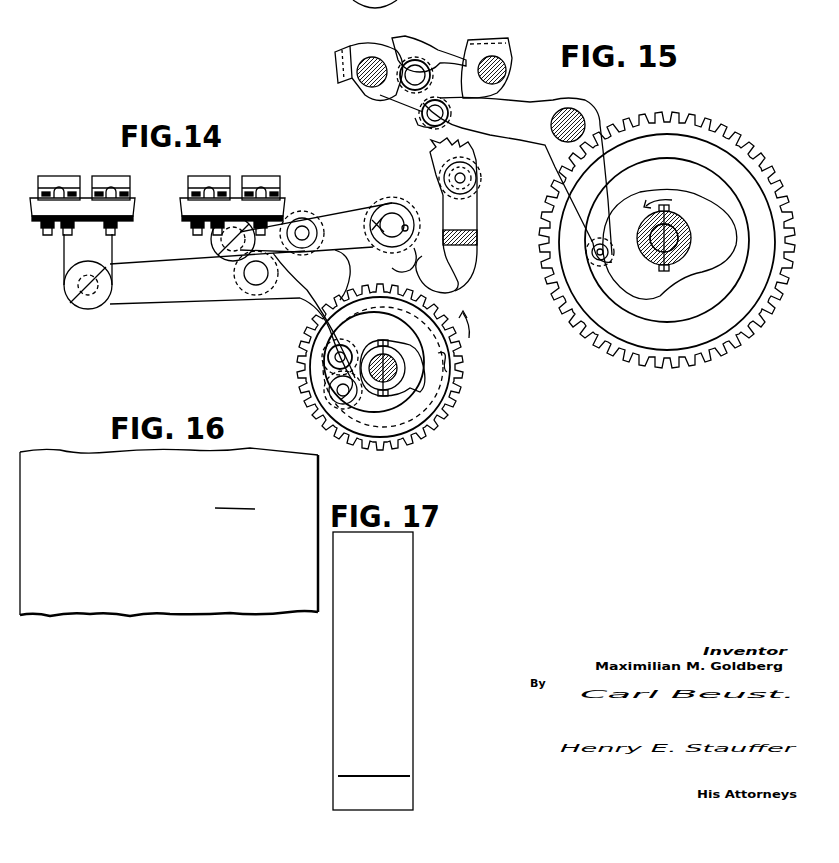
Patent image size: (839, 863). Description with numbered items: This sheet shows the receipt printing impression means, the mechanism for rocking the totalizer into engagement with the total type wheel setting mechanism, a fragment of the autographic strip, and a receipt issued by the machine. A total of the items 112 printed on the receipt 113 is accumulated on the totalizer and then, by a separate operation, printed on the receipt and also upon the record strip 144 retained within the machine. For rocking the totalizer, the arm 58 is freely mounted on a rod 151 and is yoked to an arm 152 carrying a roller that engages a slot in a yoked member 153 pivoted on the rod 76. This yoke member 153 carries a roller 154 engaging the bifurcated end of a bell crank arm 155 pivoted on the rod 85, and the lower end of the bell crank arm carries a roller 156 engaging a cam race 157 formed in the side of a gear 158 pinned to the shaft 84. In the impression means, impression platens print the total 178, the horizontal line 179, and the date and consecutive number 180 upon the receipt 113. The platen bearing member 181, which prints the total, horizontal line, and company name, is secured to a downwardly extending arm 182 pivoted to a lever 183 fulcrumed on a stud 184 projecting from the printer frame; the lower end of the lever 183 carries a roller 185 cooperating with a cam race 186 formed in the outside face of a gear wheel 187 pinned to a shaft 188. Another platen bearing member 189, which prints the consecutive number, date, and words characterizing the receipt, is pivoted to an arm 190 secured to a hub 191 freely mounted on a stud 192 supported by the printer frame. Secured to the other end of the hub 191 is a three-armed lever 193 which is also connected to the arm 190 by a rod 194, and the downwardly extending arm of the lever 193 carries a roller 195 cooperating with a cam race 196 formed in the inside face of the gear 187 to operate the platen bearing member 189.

In FIG. 14, the platen bearing member 181 is at (87, 188).
In FIG. 14, the platen bearing member 189 is at (232, 190).
In FIG. 14, the downwardly extending arm 182 is at (75, 257).
In FIG. 14, the lever 183 is at (158, 292).
In FIG. 14, the stud 184 is at (245, 276).
In FIG. 14, the cam race 186 is at (357, 413).
In FIG. 14, the rod 194 is at (302, 230).
In FIG. 14, the arm 190 is at (327, 243).
In FIG. 14, the stud 192 is at (388, 230).
In FIG. 14, the hub 191 is at (396, 248).
In FIG. 14, the three-armed lever 193 is at (452, 275).
In FIG. 14, the gear 158 is at (380, 367).
In FIG. 15, the gear 158 is at (600, 340).
In FIG. 14, the gear wheel 187 is at (313, 374).
In FIG. 14, the cam race 196 is at (452, 358).
In FIG. 14, the shaft 188 is at (372, 388).
In FIG. 14, the roller 195 is at (350, 345).
In FIG. 14, the roller 185 is at (330, 392).
In FIG. 15, the cam race 157 is at (622, 292).
In FIG. 15, the shaft 84 is at (677, 230).
In FIG. 15, the bell crank arm 155 is at (524, 132).
In FIG. 15, the rod 85 is at (572, 118).
In FIG. 15, the roller 156 is at (598, 265).
In FIG. 15, the arm 58 is at (405, 42).
In FIG. 15, the arm 152 is at (457, 63).
In FIG. 15, the rod 151 is at (506, 66).
In FIG. 15, the yoked member 153 is at (347, 85).
In FIG. 15, the rod 76 is at (372, 88).
In FIG. 15, the roller 154 is at (449, 116).
In FIG. 16, the record strip 144 is at (167, 606).
In FIG. 17, the receipt 113 is at (403, 605).
In FIG. 17, the date and consecutive number 180 is at (380, 693).
In FIG. 17, the items 112 is at (400, 752).
In FIG. 17, the horizontal line 179 is at (400, 771).
In FIG. 17, the total 178 is at (400, 797).